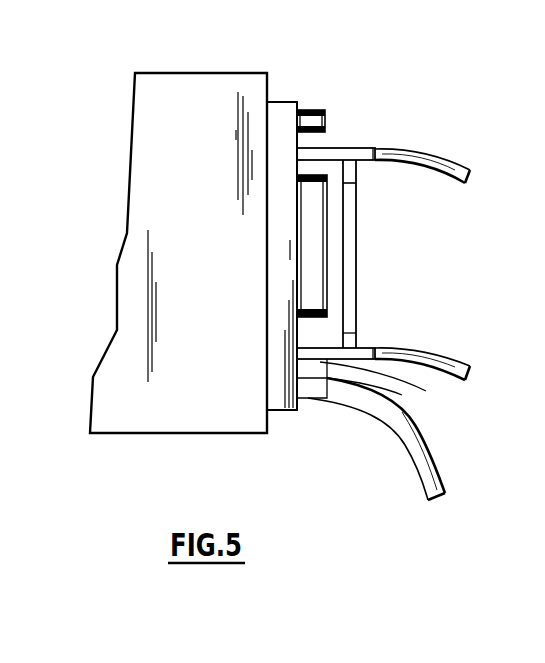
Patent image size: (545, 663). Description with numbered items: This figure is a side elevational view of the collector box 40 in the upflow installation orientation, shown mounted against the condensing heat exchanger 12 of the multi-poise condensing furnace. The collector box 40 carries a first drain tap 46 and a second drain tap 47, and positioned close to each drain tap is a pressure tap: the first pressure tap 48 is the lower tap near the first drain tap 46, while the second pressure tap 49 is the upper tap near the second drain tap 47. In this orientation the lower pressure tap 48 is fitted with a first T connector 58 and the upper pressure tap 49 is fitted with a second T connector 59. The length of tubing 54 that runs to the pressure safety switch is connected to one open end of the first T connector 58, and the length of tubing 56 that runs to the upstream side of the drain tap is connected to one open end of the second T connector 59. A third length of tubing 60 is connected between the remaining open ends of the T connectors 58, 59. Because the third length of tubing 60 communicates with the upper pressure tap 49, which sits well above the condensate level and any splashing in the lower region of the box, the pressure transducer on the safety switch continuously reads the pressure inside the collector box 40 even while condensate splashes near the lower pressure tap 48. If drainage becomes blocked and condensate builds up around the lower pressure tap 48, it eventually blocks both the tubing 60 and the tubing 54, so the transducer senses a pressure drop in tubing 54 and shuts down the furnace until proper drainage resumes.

The condensing heat exchanger 12 is at (217, 256).
The collector box 40 is at (280, 107).
The first drain tap 46 is at (311, 400).
The second drain tap 47 is at (314, 114).
The first pressure tap 48 is at (377, 387).
The second pressure tap 49 is at (315, 156).
The length of tubing 54 is at (432, 352).
The length of tubing 56 is at (455, 166).
The first T connector 58 is at (360, 350).
The second T connector 59 is at (355, 176).
The third length of tubing 60 is at (352, 263).